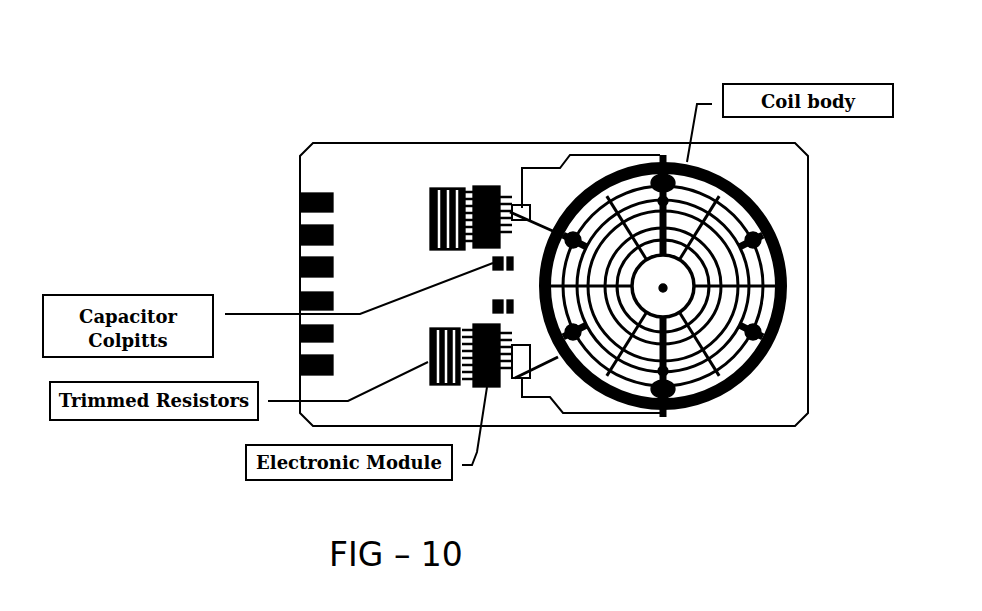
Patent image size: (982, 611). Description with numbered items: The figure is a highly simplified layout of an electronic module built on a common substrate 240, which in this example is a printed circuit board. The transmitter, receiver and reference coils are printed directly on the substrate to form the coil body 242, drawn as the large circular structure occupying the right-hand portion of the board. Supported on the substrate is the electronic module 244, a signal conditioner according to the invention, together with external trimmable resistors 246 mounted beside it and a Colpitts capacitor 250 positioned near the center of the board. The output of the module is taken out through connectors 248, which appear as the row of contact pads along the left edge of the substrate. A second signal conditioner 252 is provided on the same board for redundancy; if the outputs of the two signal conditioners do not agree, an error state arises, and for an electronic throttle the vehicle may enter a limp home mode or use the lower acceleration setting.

The common substrate 240 is at (768, 413).
The coil body 242 is at (773, 223).
The electronic module 244 is at (489, 187).
The external trimmable resistors 246 is at (445, 188).
The connectors 248 is at (299, 200).
The Colpitts capacitor 250 is at (480, 279).
The second signal conditioner 252 is at (493, 387).